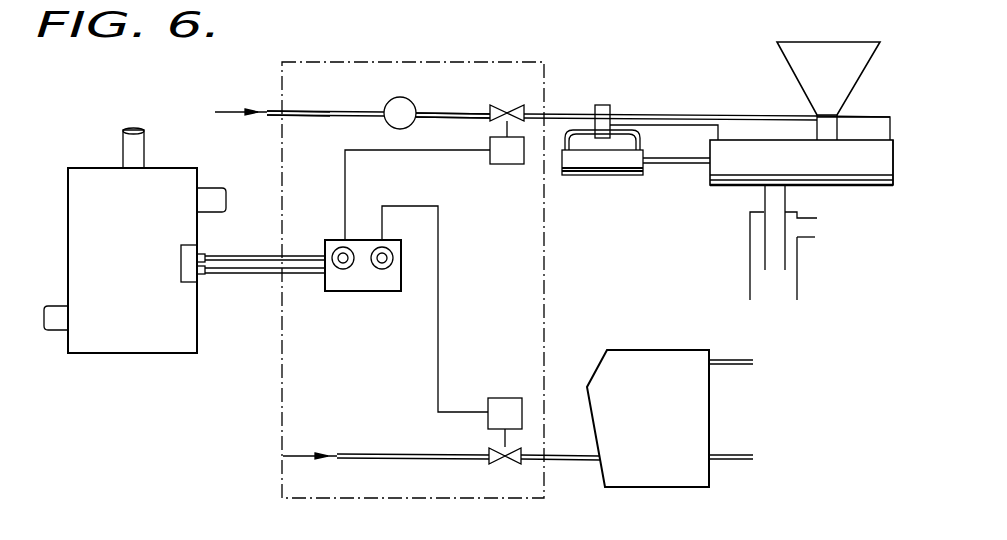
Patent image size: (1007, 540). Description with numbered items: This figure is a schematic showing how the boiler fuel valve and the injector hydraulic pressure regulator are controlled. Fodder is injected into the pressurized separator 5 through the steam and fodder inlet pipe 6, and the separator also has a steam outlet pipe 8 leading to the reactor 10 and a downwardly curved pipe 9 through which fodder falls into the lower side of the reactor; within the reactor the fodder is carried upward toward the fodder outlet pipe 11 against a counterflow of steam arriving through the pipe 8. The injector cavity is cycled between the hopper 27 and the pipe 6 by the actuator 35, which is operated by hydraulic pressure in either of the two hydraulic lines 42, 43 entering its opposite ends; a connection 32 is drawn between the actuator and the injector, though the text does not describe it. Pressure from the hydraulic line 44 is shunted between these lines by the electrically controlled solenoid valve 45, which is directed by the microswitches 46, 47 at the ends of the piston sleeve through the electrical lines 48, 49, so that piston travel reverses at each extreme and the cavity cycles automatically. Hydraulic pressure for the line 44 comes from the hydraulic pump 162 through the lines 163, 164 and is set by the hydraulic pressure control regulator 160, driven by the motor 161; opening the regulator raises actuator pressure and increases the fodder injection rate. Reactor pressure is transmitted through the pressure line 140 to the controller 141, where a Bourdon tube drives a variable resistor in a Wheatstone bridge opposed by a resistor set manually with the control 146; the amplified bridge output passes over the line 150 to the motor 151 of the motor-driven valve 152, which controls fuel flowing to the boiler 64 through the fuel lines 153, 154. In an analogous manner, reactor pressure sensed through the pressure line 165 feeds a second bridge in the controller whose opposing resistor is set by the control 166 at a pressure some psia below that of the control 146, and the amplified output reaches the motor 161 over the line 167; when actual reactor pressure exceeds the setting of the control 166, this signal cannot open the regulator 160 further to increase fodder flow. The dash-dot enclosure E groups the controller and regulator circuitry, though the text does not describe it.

The control enclosure E is at (433, 62).
The pressurized separator 5 is at (748, 269).
The steam and fodder inlet pipe 6 is at (760, 199).
The steam outlet pipe 8 is at (128, 146).
The downwardly curved pipe 9 is at (56, 332).
The cylindrical reactor 10 is at (128, 354).
The fodder outlet pipe 11 is at (214, 190).
The hopper 27 is at (862, 80).
The feed pipe 32 is at (680, 164).
The actuator 35 is at (620, 176).
The hydraulic line 42 is at (570, 137).
The hydraulic line 43 is at (638, 132).
The hydraulic line 44 is at (545, 110).
The solenoid valve 45 is at (605, 105).
The microswitch 46 is at (720, 140).
The microswitch 47 is at (885, 139).
The electrical line 48 is at (788, 116).
The electrical line 49 is at (680, 127).
The boiler 64 is at (677, 331).
The pressure line 140 is at (258, 276).
The controller 141 is at (356, 288).
The control 146 is at (386, 270).
The line 150 is at (438, 270).
The motor 151 is at (508, 398).
The motor-driven valve 152 is at (506, 464).
The fuel line 153 is at (400, 436).
The fuel line 154 is at (562, 460).
The hydraulic pressure control regulator 160 is at (520, 104).
The motor 161 is at (512, 164).
The hydraulic pump 162 is at (409, 98).
The line 163 is at (336, 87).
The line 164 is at (460, 119).
The pressure line 165 is at (257, 255).
The control 166 is at (341, 246).
The line 167 is at (345, 184).